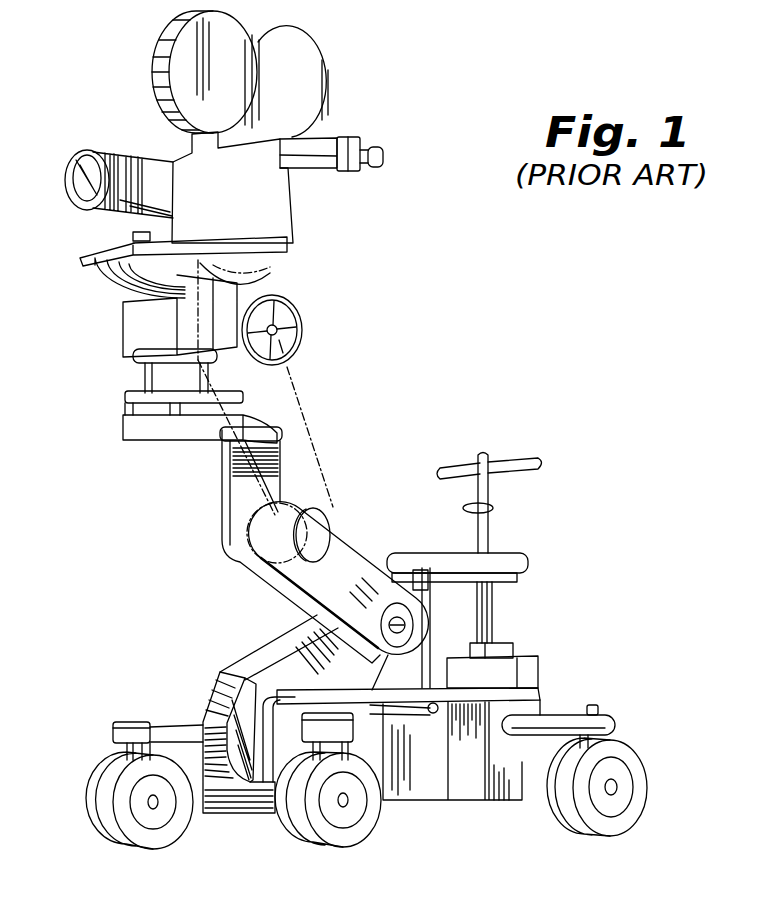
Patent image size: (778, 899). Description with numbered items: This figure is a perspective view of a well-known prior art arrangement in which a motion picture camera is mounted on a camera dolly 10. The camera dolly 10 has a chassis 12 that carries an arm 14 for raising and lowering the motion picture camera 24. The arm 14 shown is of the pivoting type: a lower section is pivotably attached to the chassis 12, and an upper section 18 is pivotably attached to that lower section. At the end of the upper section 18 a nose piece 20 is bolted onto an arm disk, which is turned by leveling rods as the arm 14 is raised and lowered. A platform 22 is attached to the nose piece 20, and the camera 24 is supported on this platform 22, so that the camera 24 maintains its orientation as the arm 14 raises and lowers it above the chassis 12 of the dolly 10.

The camera dolly 10 is at (102, 660).
The chassis 12 is at (247, 800).
The arm 14 is at (270, 614).
The upper section 18 is at (335, 573).
The nose piece 20 is at (232, 497).
The platform 22 is at (190, 437).
The motion picture camera 24 is at (262, 215).